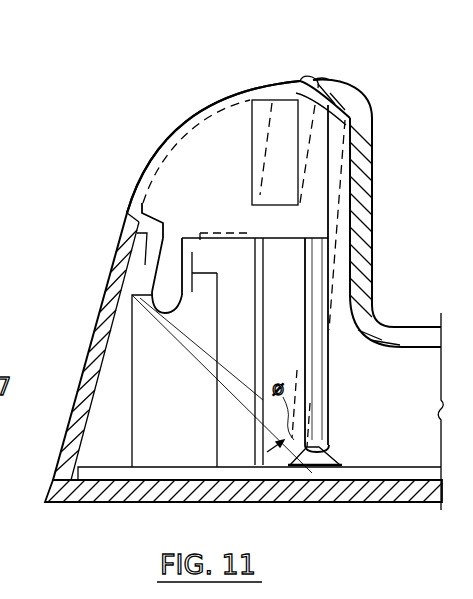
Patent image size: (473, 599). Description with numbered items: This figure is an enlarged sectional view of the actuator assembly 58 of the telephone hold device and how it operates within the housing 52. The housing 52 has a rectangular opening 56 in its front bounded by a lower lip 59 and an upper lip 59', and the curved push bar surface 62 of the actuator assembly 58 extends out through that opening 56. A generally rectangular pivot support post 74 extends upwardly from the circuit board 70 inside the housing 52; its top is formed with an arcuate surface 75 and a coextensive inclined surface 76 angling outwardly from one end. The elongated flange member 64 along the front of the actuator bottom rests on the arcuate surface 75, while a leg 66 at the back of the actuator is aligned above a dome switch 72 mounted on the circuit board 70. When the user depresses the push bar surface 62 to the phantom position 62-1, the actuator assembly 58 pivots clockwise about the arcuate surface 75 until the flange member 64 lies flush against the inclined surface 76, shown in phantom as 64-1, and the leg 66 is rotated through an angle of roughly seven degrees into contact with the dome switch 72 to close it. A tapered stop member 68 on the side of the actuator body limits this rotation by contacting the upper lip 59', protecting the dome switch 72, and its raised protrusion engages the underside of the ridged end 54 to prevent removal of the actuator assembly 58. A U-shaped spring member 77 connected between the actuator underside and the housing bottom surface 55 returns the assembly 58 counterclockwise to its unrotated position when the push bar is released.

The housing 52 is at (81, 376).
The ridged end 54 is at (373, 282).
The housing bottom surface 55 is at (290, 503).
The rectangular opening 56 is at (302, 82).
The actuator assembly 58 is at (138, 173).
The lower lip 59 is at (93, 206).
The upper lip 59' is at (354, 63).
The curved push bar surface 62 is at (170, 131).
The depressed position of push bar surface 62-1 is at (232, 108).
The elongated flange member 64 is at (140, 237).
The rotated position of flange member 64-1 is at (167, 233).
The leg 66 is at (332, 373).
The stop member 68 is at (252, 180).
The circuit board 70 is at (412, 480).
The dome switch 72 is at (337, 464).
The pivot support post 74 is at (175, 432).
The arcuate surface 75 is at (165, 314).
The inclined surface 76 is at (192, 290).
The spring member 77 is at (263, 287).